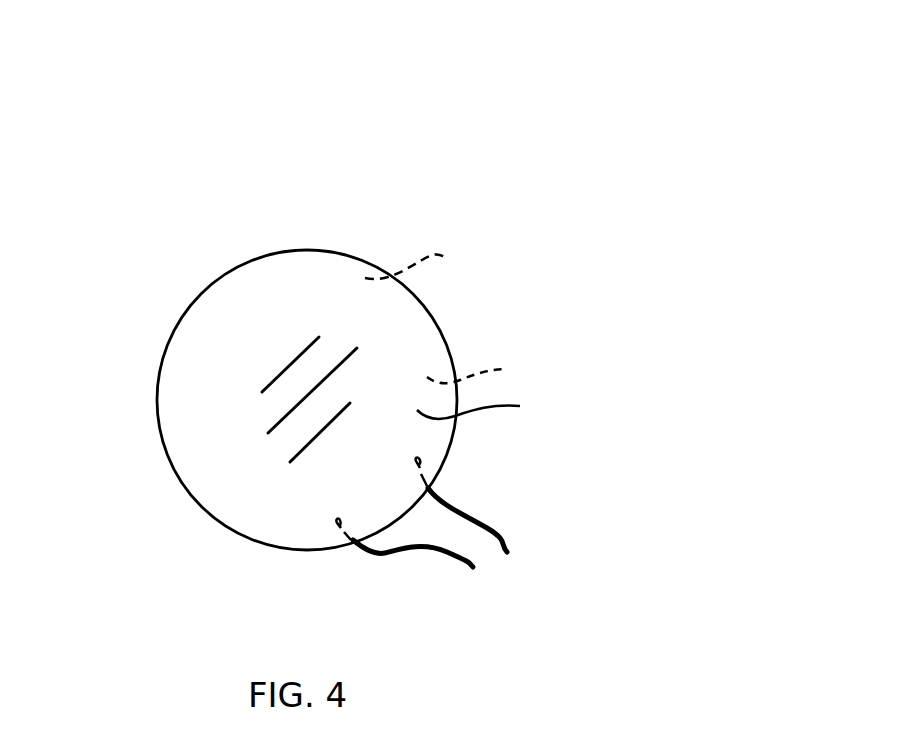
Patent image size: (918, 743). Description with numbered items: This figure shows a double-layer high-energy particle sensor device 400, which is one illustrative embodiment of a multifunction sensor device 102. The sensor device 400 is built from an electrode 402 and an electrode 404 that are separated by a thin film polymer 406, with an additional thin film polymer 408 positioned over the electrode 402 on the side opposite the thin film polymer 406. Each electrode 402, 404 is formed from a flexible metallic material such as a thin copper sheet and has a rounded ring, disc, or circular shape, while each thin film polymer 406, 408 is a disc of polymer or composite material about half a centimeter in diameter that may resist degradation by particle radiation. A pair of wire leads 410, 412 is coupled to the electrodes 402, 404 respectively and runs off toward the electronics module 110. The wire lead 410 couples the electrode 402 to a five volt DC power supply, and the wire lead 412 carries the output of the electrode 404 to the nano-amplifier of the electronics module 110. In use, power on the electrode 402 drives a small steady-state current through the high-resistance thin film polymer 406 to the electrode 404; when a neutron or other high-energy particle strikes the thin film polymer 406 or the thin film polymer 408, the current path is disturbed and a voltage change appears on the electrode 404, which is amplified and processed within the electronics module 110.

The double-layer high-energy particle sensor device 400 is at (738, 98).
The multifunction sensor device 102 is at (122, 228).
The electrode 402 is at (427, 265).
The electrode 404 is at (437, 307).
The thin film polymer 406 is at (491, 373).
The thin film polymer 408 is at (491, 408).
The wire lead 410 is at (378, 553).
The wire lead 412 is at (473, 517).
The electronics module 110 is at (594, 590).